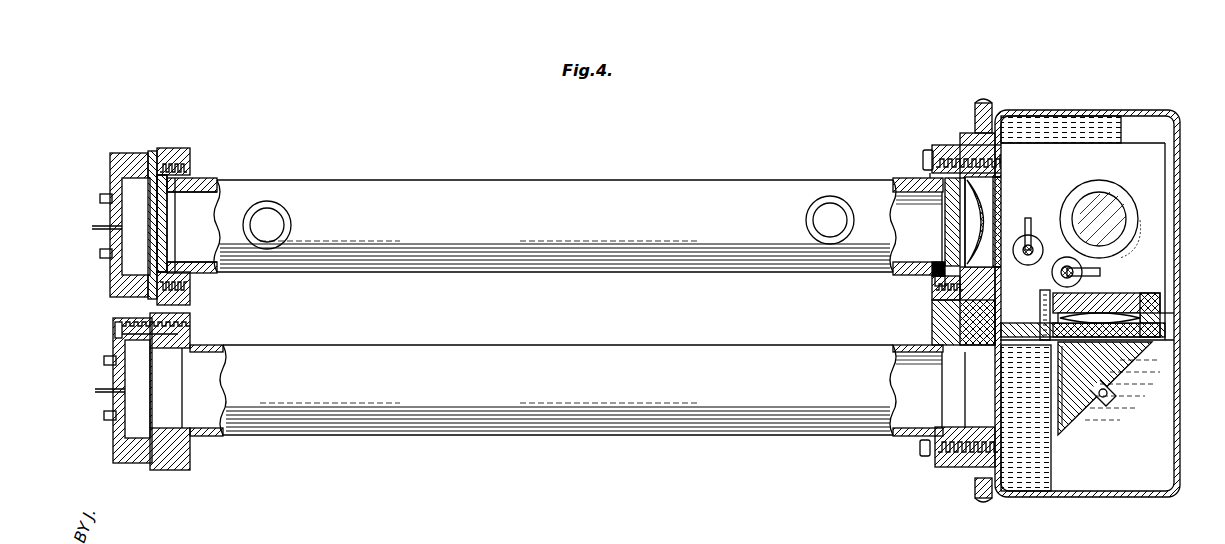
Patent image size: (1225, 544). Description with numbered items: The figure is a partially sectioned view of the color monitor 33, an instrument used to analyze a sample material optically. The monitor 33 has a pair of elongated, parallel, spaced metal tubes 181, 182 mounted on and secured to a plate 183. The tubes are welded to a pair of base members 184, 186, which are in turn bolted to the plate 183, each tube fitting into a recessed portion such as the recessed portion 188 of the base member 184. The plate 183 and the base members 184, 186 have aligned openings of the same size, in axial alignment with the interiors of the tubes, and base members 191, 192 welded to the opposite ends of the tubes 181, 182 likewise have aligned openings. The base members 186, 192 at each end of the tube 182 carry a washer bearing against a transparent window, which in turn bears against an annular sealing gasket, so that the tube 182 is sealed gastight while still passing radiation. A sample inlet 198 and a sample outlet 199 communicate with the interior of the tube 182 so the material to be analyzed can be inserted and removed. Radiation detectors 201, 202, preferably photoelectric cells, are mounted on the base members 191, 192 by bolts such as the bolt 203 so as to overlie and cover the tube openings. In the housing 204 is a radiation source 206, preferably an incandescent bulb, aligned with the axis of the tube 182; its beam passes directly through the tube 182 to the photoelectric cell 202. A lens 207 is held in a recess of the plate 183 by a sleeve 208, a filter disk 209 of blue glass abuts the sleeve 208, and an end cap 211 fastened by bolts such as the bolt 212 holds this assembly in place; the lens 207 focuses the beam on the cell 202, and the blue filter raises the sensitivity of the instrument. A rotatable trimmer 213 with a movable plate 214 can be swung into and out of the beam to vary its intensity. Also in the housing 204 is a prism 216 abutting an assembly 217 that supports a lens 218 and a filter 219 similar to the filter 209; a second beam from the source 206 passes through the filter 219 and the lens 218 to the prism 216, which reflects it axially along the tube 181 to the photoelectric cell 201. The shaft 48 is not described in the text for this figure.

The color monitor 33 is at (594, 452).
The shaft 48 is at (1085, 276).
The metal tube 181 is at (426, 438).
The metal tube 182 is at (558, 180).
The plate 183 is at (975, 498).
The base member 184 is at (957, 467).
The base member 186 is at (948, 145).
The recessed portion 188 is at (932, 274).
The base member 191 is at (185, 470).
The base member 192 is at (173, 148).
The sample inlet 198 is at (808, 222).
The sample outlet 199 is at (286, 214).
The radiation detector 201 is at (113, 430).
The radiation detector 202 is at (113, 162).
The bolt 203 is at (115, 331).
The housing 204 is at (1118, 497).
The radiation source 206 is at (1108, 190).
The lens 207 is at (1005, 210).
The sleeve 208 is at (939, 286).
The filter disk 209 is at (1000, 195).
The end cap 211 is at (1015, 160).
The bolt 212 is at (1017, 172).
The rotatable trimmer 213 is at (1052, 274).
The movable plate 214 is at (1031, 235).
The prism 216 is at (1068, 412).
The assembly 217 is at (1176, 337).
The lens 218 is at (1176, 315).
The filter 219 is at (1116, 304).